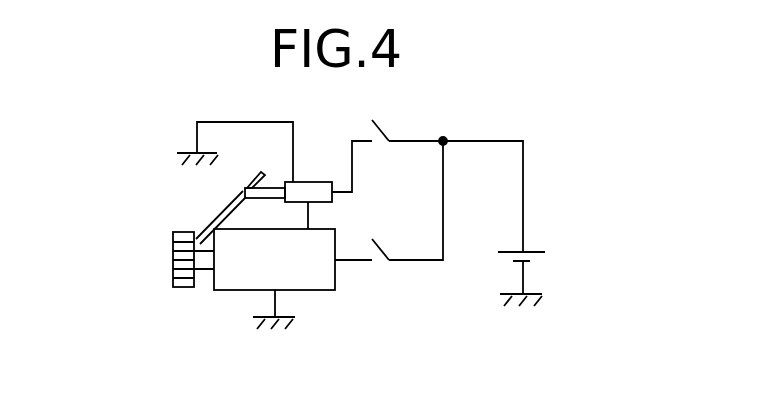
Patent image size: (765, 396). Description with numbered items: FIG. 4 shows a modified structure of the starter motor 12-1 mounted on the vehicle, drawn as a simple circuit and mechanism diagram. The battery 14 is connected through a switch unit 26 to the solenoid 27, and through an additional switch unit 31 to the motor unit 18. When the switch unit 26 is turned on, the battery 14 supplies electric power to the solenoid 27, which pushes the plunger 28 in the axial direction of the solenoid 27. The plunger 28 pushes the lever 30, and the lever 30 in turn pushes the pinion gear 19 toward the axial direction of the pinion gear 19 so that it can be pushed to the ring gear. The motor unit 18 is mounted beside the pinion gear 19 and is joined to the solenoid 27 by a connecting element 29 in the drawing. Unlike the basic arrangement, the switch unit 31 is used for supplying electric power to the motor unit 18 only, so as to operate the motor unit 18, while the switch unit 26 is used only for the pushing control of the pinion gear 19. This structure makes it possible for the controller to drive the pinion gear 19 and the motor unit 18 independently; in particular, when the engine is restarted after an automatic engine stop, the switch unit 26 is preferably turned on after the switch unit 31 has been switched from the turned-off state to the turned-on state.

The starter motor 12-1 is at (428, 313).
The battery 14 is at (512, 250).
The motor unit 18 is at (325, 292).
The pinion gear 19 is at (173, 258).
The switch unit 26 is at (378, 144).
The solenoid 27 is at (306, 172).
The plunger 28 is at (273, 182).
The connecting line 29 is at (325, 203).
The lever 30 is at (225, 206).
The additional switch unit 31 is at (385, 262).